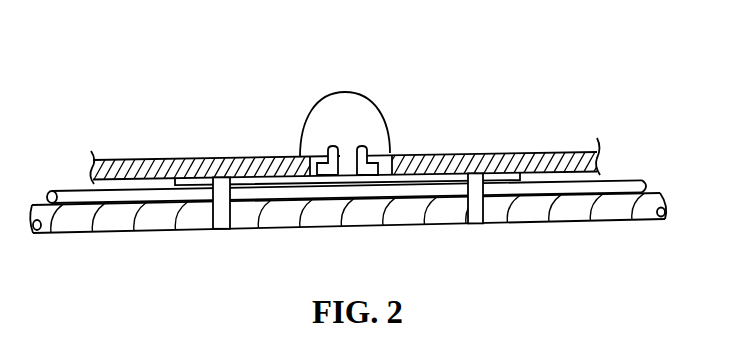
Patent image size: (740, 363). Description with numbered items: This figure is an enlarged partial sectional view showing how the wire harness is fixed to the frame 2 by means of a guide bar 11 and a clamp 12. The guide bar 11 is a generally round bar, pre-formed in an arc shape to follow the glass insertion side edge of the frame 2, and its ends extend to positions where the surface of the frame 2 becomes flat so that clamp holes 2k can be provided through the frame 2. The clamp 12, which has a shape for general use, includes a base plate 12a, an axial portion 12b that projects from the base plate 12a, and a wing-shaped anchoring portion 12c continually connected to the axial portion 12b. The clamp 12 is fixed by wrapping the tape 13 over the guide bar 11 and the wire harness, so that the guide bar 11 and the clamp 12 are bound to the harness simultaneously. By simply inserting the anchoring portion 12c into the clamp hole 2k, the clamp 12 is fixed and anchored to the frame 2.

The frame 2 is at (532, 152).
The clamp hole 2k is at (412, 157).
The guide bar 11 is at (135, 200).
The clamp 12 is at (347, 157).
The base plate 12a is at (293, 184).
The axial portion 12b is at (315, 157).
The wing-shaped anchoring portion 12c is at (327, 105).
The tape 13 is at (220, 230).